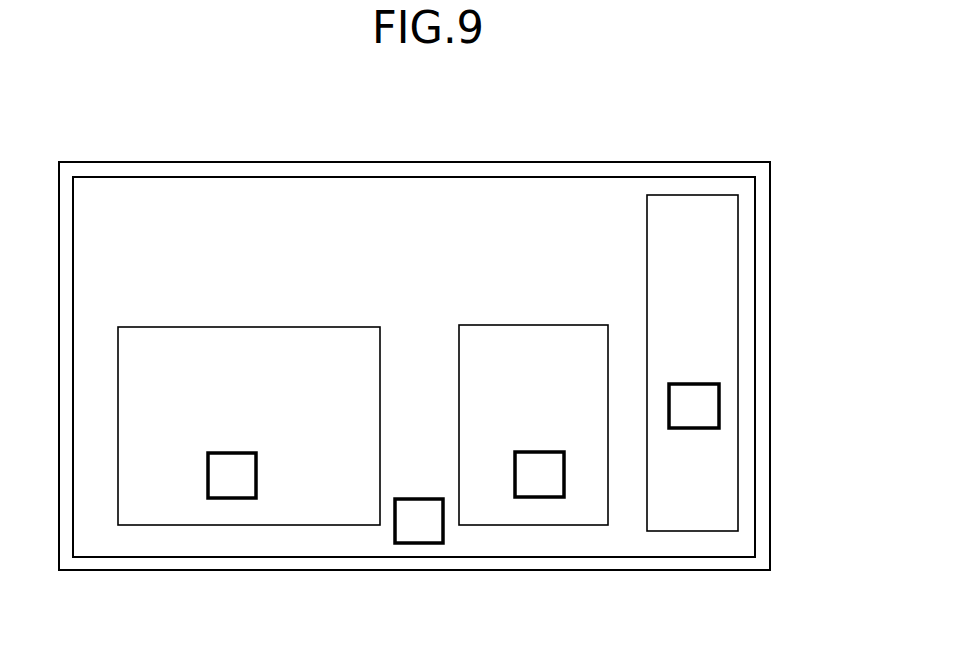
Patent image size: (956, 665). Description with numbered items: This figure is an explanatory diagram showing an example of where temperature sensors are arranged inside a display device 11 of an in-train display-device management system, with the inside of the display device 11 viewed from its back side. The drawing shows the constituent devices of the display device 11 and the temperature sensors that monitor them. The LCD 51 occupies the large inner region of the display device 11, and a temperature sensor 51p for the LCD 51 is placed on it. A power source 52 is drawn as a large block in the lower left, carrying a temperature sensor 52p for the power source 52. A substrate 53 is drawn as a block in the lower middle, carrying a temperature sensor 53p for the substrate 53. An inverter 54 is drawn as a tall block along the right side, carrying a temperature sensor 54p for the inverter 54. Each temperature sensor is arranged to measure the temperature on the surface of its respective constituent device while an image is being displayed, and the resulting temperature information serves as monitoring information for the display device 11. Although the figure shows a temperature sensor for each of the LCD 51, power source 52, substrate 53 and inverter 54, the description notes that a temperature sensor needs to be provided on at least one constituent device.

The display device 11 is at (575, 163).
The LCD 51 is at (430, 178).
The temperature sensor for LCD 51p is at (420, 543).
The power source 52 is at (306, 525).
The temperature sensor for power source 52p is at (232, 498).
The substrate 53 is at (490, 525).
The temperature sensor for substrate 53p is at (540, 497).
The inverter 54 is at (698, 531).
The temperature sensor for inverter 54p is at (719, 403).